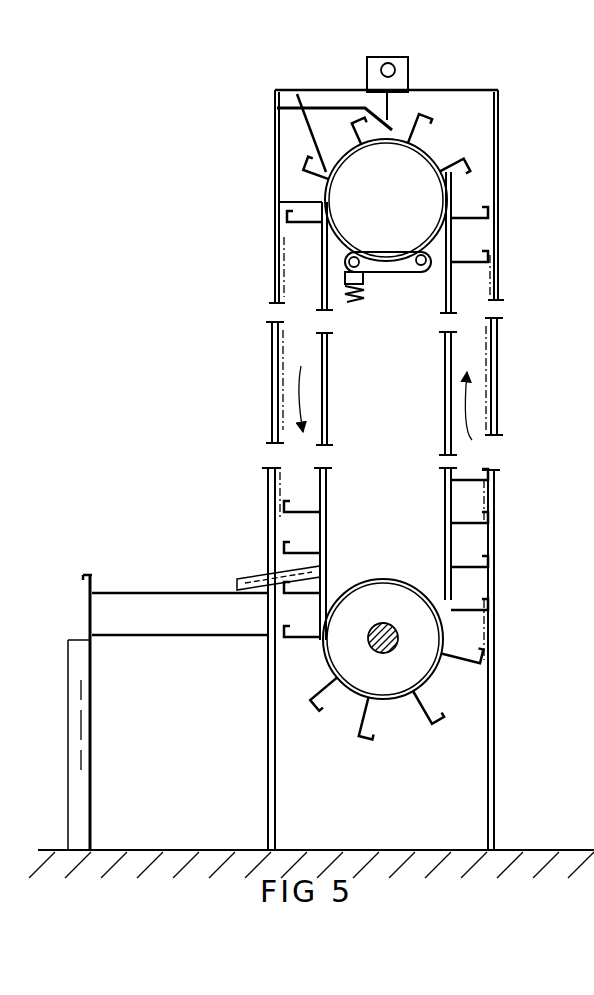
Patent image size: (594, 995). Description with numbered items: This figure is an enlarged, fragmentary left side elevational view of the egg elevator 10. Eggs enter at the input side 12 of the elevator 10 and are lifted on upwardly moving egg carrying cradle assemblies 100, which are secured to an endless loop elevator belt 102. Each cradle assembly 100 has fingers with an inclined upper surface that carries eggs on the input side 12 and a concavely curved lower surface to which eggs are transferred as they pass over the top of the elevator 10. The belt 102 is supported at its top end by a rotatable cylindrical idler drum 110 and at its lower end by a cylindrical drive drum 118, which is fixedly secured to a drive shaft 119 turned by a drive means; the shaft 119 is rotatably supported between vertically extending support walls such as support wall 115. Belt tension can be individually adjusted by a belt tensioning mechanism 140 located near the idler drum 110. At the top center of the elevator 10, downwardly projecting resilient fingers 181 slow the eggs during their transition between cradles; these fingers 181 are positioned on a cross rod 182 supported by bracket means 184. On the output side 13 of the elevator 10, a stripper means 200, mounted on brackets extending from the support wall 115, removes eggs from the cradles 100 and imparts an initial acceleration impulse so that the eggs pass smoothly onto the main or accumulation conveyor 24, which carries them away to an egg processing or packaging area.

The egg elevator 10 is at (503, 86).
The input side 12 is at (503, 346).
The output side 13 is at (268, 386).
The main or accumulation conveyor 24 is at (145, 589).
The egg carrying cradle assemblies 100 is at (292, 230).
The endless loop elevator belt 102 is at (323, 506).
The idler drum 110 is at (418, 164).
The support wall 115 is at (404, 397).
The drive drum 118 is at (360, 603).
The drive shaft 119 is at (385, 622).
The belt tensioning mechanism 140 is at (394, 280).
The resilient fingers 181 is at (384, 108).
The cross rod 182 is at (394, 67).
The bracket means 184 is at (403, 70).
The stripper means 200 is at (259, 571).